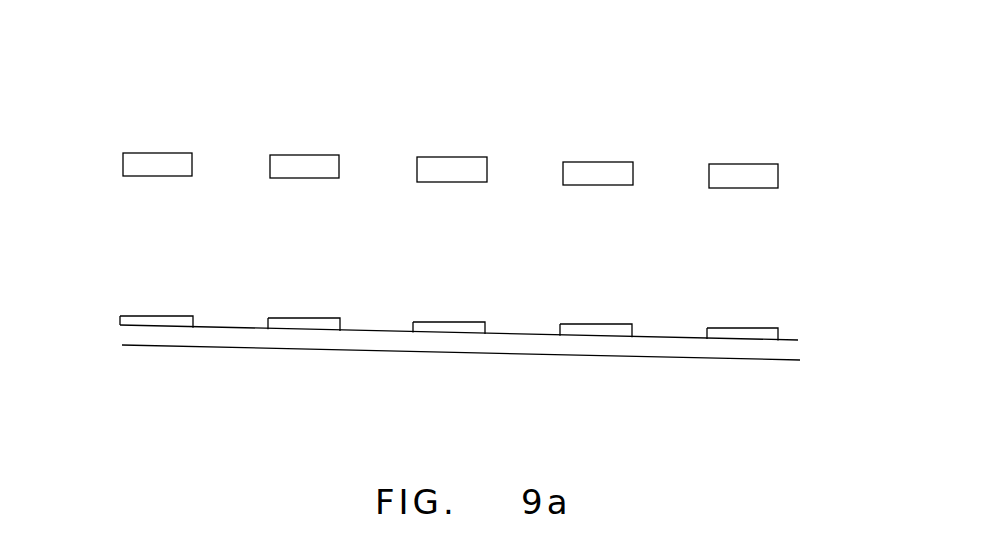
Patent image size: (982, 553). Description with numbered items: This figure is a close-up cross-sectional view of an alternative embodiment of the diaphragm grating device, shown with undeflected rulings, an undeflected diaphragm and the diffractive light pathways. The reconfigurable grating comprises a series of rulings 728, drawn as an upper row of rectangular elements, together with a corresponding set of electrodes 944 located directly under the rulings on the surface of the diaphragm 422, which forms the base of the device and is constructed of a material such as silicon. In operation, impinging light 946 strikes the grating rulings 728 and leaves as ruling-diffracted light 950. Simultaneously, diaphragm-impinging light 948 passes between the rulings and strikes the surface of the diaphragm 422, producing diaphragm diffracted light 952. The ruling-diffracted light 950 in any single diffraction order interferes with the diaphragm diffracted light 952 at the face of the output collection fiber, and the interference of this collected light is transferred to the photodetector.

The rulings 728 is at (757, 176).
The electrodes 944 is at (779, 330).
The micromachined diaphragm 422 is at (777, 348).
The impinging light 946 is at (148, 152).
The ruling-diffracted light 950 is at (147, 152).
The diaphragm-impinging light 948 is at (497, 332).
The diaphragm diffracted light 952 is at (497, 332).